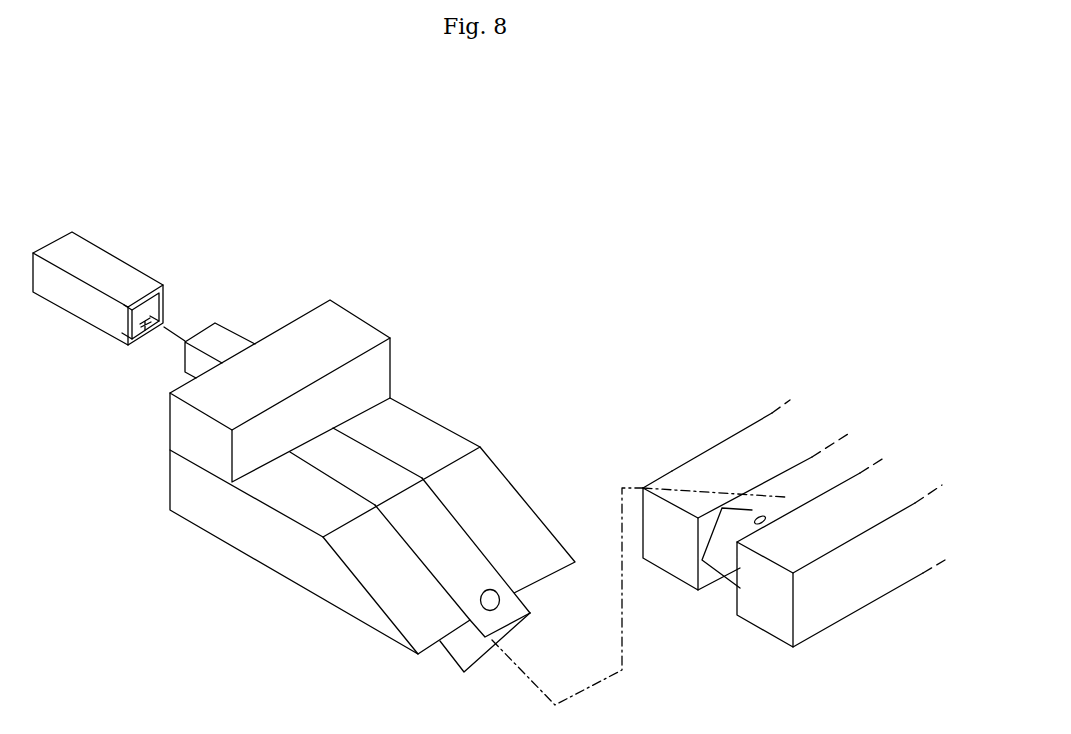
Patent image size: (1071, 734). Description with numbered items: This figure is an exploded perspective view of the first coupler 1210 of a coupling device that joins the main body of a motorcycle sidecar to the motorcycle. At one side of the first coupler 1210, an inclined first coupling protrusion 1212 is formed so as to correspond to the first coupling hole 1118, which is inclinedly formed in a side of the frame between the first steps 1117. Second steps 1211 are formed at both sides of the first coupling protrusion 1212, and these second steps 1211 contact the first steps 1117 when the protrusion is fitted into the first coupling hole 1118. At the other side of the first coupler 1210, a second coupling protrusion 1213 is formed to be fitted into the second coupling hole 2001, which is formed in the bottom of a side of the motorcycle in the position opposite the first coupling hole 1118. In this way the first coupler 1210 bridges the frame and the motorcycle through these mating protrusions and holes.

The first coupler 1210 is at (438, 405).
The second steps 1211 is at (475, 480).
The first coupling protrusion 1212 is at (470, 560).
The second coupling protrusion 1213 is at (222, 338).
The first steps 1117 is at (723, 473).
The first coupling hole 1118 is at (797, 480).
The second coupling hole 2001 is at (147, 328).